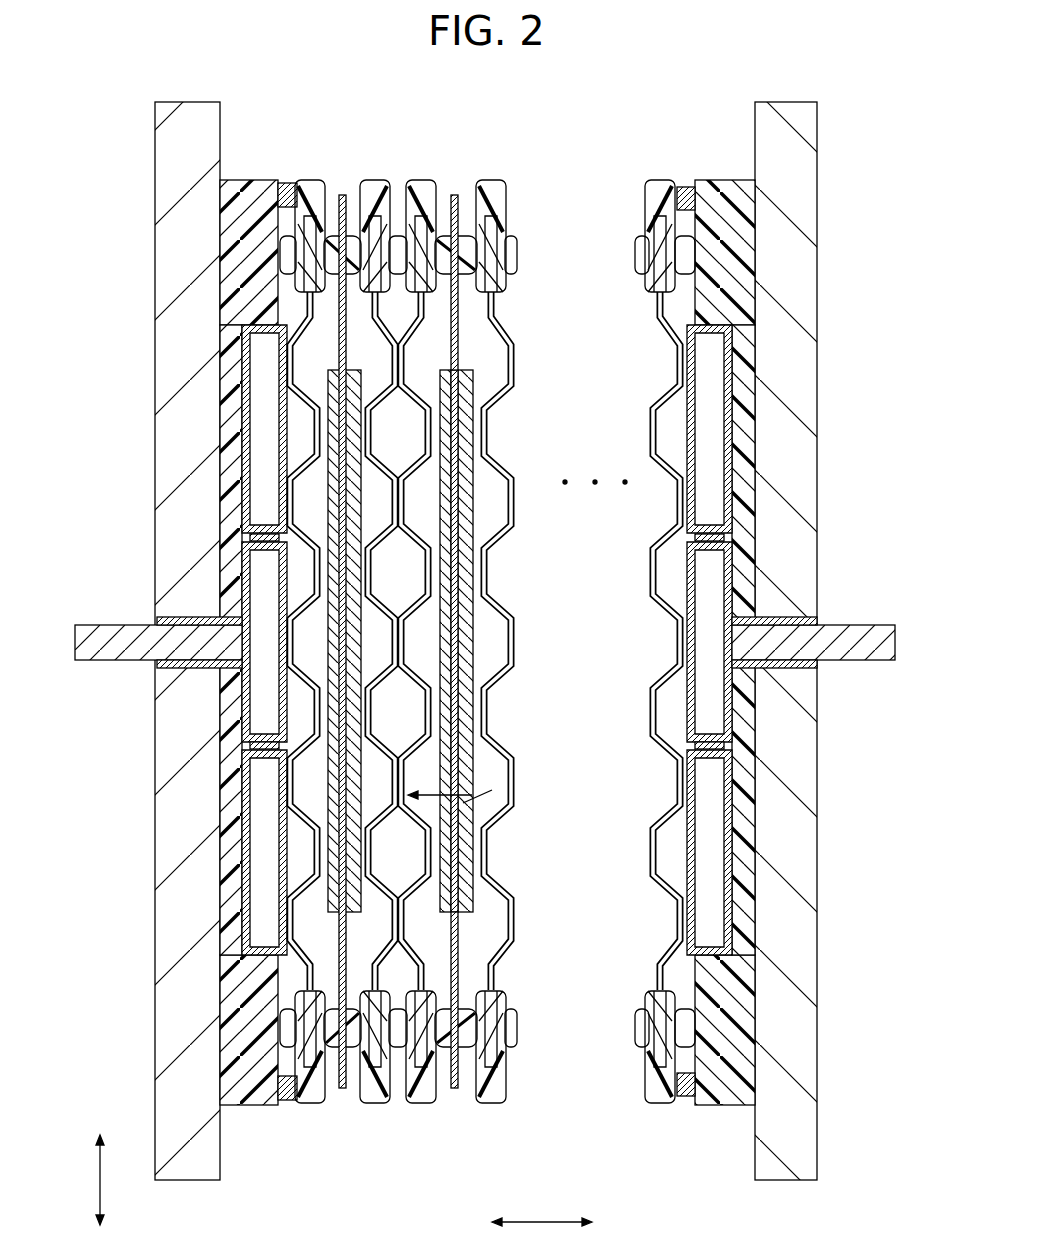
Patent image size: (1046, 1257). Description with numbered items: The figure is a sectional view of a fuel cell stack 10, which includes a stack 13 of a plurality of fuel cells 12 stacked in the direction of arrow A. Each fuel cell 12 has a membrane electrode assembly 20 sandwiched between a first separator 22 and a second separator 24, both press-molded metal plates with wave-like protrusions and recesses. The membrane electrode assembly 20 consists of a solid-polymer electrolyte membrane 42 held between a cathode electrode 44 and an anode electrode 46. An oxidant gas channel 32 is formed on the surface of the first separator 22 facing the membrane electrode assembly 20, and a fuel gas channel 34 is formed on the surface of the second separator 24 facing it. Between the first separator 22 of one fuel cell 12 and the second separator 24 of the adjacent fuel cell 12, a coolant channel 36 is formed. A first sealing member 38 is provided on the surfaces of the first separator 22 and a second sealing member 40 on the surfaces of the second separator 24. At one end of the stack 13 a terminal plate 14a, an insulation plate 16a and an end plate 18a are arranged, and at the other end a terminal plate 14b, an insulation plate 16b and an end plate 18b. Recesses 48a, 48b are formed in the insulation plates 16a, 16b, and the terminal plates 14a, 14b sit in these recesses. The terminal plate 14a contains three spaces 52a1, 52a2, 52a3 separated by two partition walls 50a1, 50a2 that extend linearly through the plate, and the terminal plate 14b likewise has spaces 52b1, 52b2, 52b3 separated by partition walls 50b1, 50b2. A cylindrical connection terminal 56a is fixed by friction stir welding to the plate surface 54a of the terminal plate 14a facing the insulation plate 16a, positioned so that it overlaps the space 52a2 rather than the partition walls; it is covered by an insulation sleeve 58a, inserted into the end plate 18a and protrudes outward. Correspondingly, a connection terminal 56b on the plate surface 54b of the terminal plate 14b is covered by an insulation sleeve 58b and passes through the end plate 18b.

The fuel cell stack 10 is at (576, 79).
The fuel cell 12 is at (334, 176).
The stack 13 is at (562, 155).
The terminal plate 14a is at (240, 861).
The terminal plate 14b is at (735, 861).
The insulation plate 16a is at (232, 920).
The insulation plate 16b is at (745, 920).
The end plate 18a is at (165, 945).
The end plate 18b is at (808, 945).
The membrane electrode assembly 20 is at (515, 641).
The first separator 22 is at (496, 616).
The second separator 24 is at (472, 800).
The oxidant gas channel 32 is at (486, 758).
The fuel gas channel 34 is at (480, 705).
The coolant channel 36 is at (420, 575).
The first sealing member 38 is at (496, 186).
The second sealing member 40 is at (425, 186).
The solid-polymer electrolyte membrane 42 is at (460, 852).
The cathode electrode 44 is at (478, 822).
The anode electrode 46 is at (482, 877).
The recess 48a is at (179, 640).
The recess 48b is at (800, 640).
The partition wall 50a1 is at (253, 538).
The partition wall 50a2 is at (253, 748).
The partition wall 50b1 is at (721, 538).
The partition wall 50b2 is at (721, 748).
The space 52a1 is at (258, 392).
The space 52a2 is at (258, 560).
The space 52a3 is at (258, 820).
The space 52b1 is at (716, 392).
The space 52b2 is at (716, 560).
The space 52b3 is at (716, 820).
The plate surface 54a is at (238, 718).
The plate surface 54b is at (738, 718).
The connection terminal 56a is at (88, 640).
The connection terminal 56b is at (888, 640).
The insulation sleeve 58a is at (178, 665).
The insulation sleeve 58b is at (800, 665).